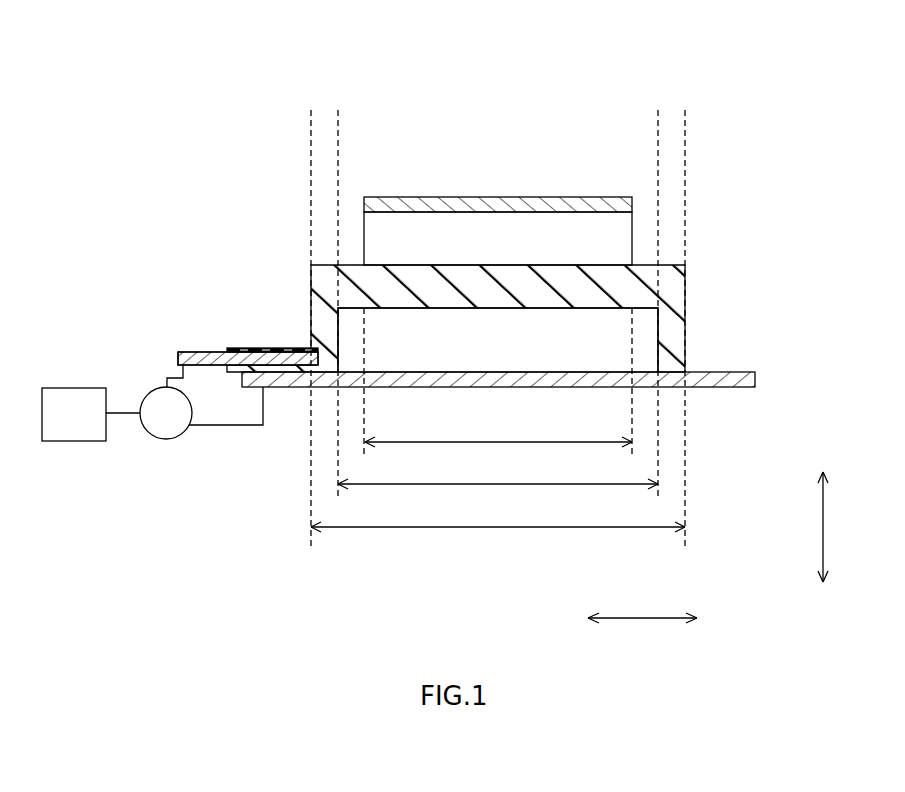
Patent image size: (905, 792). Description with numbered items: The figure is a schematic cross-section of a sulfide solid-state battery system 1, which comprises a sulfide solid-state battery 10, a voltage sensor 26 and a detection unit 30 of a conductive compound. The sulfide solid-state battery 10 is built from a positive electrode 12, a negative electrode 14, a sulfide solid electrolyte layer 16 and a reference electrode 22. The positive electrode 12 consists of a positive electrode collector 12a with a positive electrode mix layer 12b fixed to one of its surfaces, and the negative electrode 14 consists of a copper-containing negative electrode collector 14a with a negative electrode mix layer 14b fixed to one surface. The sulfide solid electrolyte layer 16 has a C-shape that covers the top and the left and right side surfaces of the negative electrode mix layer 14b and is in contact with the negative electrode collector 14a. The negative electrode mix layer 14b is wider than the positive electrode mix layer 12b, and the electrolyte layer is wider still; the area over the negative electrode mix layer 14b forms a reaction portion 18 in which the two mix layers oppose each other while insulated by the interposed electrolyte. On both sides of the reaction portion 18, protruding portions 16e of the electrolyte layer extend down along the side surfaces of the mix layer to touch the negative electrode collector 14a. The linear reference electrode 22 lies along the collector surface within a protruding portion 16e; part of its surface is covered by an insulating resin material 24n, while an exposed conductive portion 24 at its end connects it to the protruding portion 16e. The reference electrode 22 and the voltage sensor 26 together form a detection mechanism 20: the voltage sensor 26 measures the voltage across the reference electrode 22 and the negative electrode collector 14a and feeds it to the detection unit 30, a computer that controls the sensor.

The sulfide solid-state battery system 1 is at (150, 59).
The sulfide solid-state battery 10 is at (735, 127).
The positive electrode 12 is at (768, 152).
The positive electrode collector 12a is at (634, 204).
The positive electrode mix layer 12b is at (627, 241).
The negative electrode 14 is at (800, 285).
The negative electrode collector 14a is at (705, 372).
The negative electrode mix layer 14b is at (662, 336).
The sulfide solid electrolyte layer 16 is at (675, 286).
The protruding portions 16e is at (338, 113).
The reaction portion 18 is at (658, 113).
The detection mechanism 20 is at (171, 284).
The reference electrode 22 is at (192, 350).
The conductive portion 24 is at (312, 342).
The insulating resin material 24n is at (250, 348).
The voltage sensor 26 is at (157, 440).
The detection unit 30 is at (73, 441).